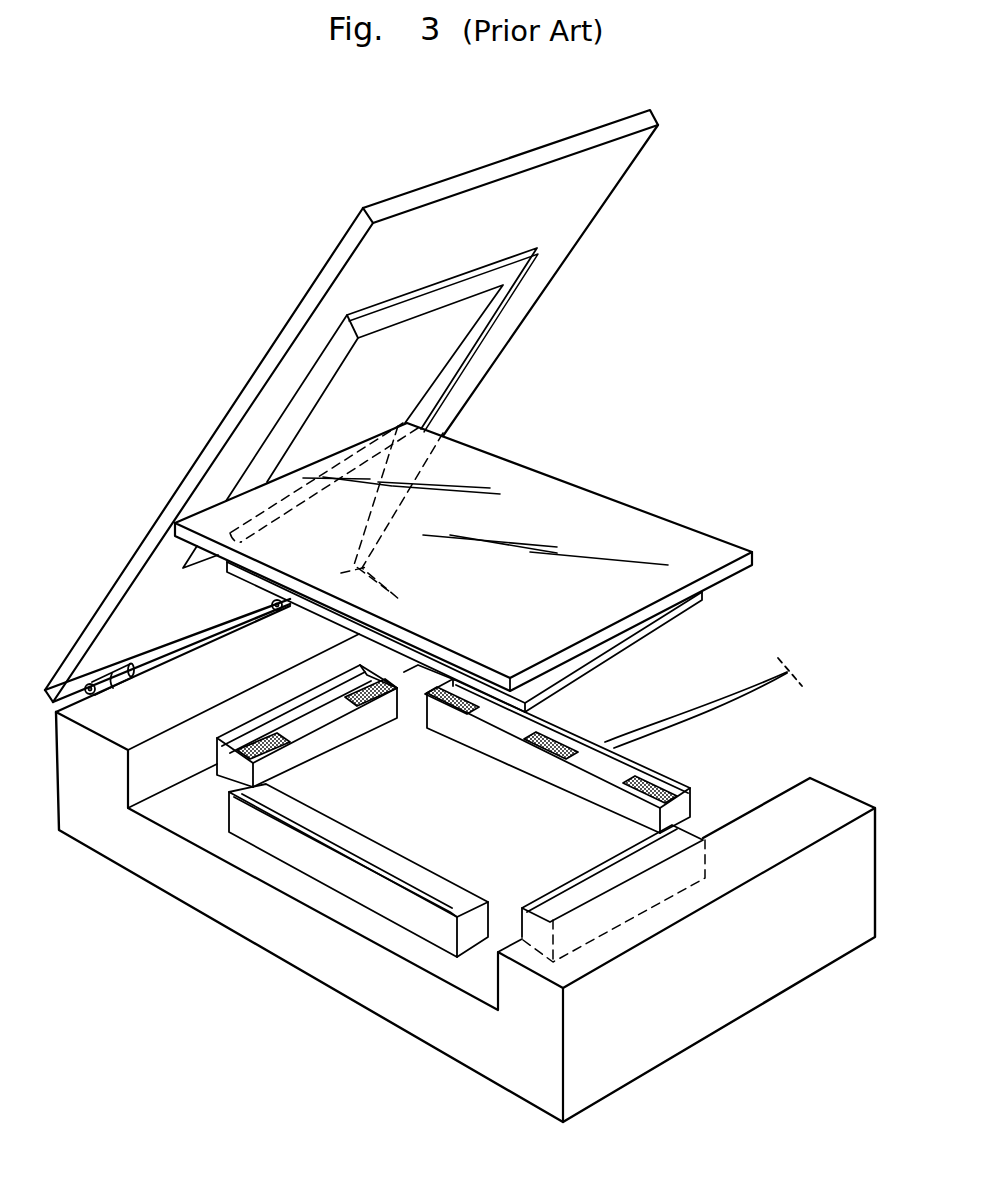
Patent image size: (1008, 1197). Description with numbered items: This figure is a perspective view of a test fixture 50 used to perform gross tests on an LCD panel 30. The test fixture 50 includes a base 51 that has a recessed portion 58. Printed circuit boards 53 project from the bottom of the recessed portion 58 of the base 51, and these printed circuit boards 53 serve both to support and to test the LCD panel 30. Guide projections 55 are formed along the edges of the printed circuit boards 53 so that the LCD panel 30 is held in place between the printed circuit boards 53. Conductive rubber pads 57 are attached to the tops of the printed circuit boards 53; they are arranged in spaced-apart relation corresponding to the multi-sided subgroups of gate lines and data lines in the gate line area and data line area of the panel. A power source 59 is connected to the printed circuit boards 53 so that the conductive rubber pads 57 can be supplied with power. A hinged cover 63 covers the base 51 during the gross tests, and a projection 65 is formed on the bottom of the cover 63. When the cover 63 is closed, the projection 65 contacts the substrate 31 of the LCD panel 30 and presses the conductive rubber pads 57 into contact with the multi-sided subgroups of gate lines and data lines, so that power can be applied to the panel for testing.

The test fixture 50 is at (246, 297).
The hinged cover 63 is at (580, 212).
The projection 65 is at (454, 367).
The LCD panel 30 is at (622, 476).
The substrate 31 is at (697, 548).
The base 51 is at (117, 845).
The recessed portion 58 is at (180, 818).
The printed circuit boards 53 is at (227, 775).
The guide projections 55 is at (440, 903).
The conductive rubber pads 57 is at (688, 774).
The power source 59 is at (748, 695).